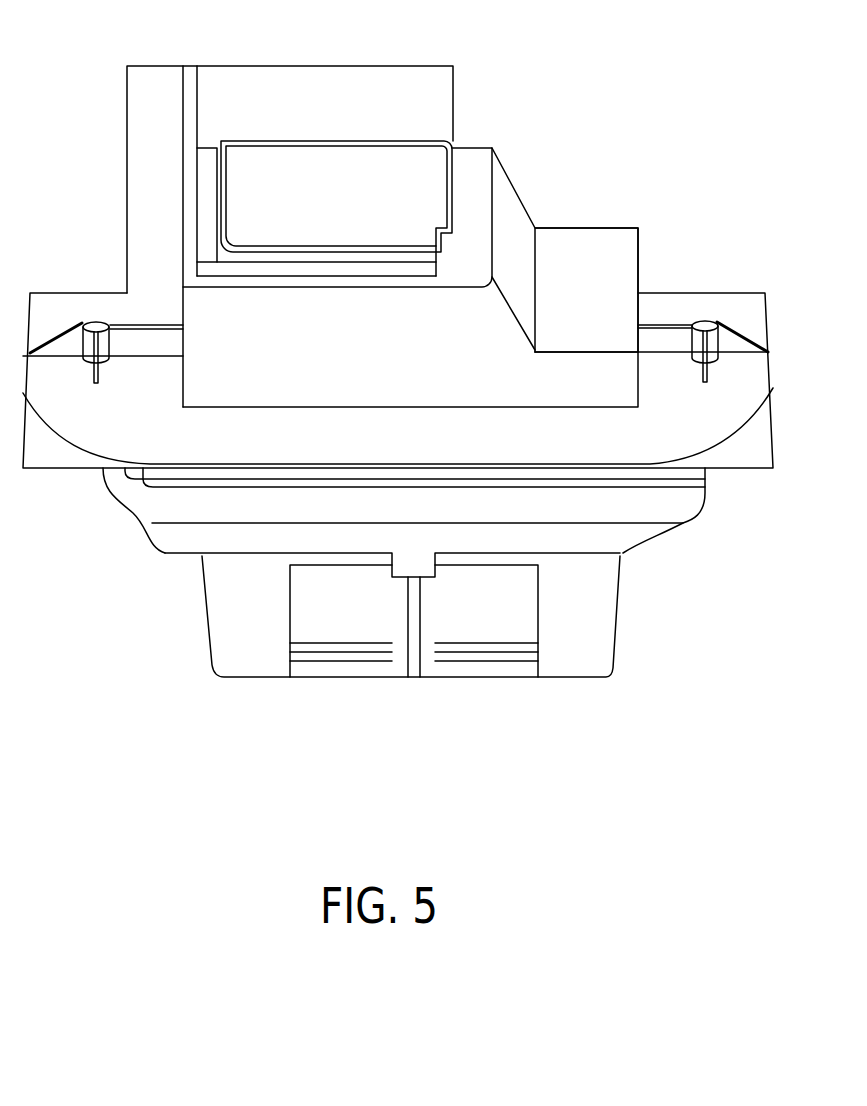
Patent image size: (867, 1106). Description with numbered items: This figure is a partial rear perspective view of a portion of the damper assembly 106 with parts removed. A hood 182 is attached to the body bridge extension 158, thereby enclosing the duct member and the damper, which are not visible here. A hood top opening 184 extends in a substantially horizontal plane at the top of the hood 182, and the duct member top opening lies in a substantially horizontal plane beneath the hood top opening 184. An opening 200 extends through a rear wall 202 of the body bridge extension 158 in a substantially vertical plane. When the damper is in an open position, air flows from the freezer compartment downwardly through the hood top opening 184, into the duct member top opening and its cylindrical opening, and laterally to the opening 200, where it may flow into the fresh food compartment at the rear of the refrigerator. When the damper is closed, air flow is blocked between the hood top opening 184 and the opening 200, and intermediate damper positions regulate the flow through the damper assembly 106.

The damper assembly 106 is at (658, 70).
The hood top opening 184 is at (418, 165).
The hood 182 is at (508, 222).
The body bridge extension 158 is at (200, 563).
The rear wall 202 is at (235, 655).
The opening 200 is at (323, 630).